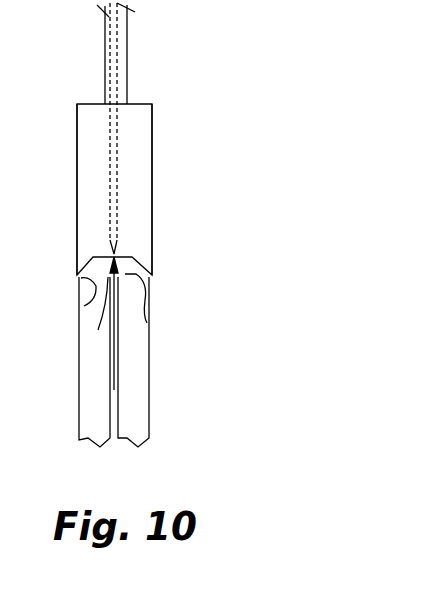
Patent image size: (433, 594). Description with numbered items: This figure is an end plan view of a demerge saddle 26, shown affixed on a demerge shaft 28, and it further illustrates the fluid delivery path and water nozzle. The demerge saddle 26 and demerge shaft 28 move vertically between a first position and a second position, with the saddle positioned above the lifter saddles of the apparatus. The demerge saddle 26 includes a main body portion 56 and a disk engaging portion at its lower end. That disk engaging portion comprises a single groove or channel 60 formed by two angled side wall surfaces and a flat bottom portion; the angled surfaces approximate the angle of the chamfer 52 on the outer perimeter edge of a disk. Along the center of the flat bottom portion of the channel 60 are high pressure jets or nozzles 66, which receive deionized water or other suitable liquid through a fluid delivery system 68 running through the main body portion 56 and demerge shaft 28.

The demerge saddle 26 is at (175, 113).
The demerge shaft 28 is at (127, 42).
The main body portion 56 is at (138, 152).
The fluid delivery system 68 is at (122, 200).
The high pressure jets or nozzles 66 is at (119, 247).
The chamfer 52 is at (88, 304).
The groove or channel 60 is at (98, 330).